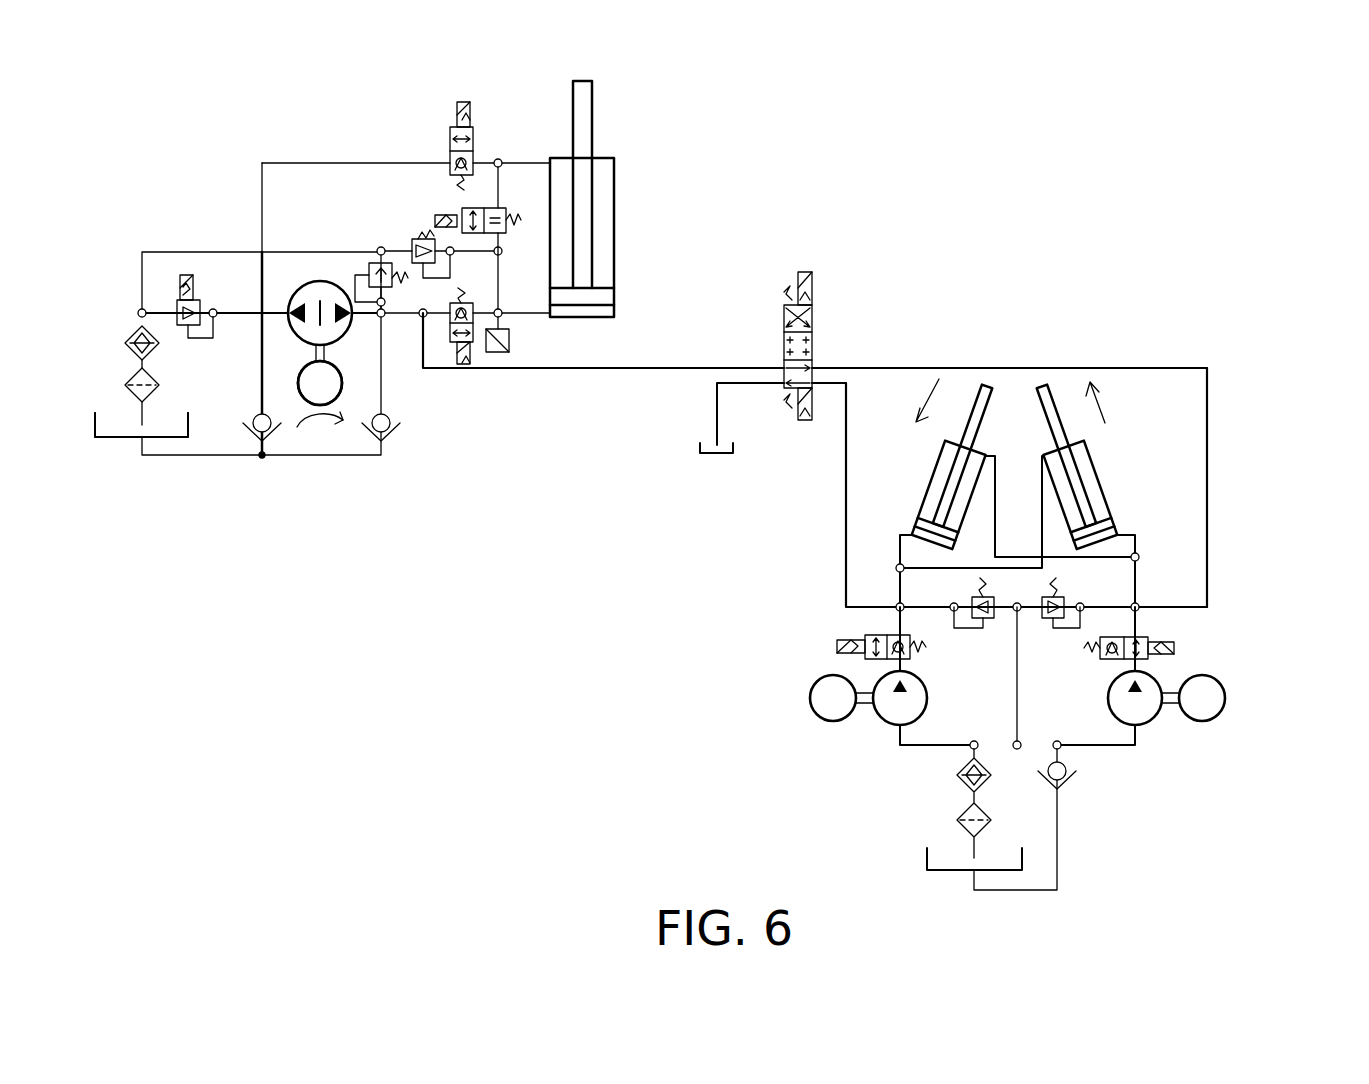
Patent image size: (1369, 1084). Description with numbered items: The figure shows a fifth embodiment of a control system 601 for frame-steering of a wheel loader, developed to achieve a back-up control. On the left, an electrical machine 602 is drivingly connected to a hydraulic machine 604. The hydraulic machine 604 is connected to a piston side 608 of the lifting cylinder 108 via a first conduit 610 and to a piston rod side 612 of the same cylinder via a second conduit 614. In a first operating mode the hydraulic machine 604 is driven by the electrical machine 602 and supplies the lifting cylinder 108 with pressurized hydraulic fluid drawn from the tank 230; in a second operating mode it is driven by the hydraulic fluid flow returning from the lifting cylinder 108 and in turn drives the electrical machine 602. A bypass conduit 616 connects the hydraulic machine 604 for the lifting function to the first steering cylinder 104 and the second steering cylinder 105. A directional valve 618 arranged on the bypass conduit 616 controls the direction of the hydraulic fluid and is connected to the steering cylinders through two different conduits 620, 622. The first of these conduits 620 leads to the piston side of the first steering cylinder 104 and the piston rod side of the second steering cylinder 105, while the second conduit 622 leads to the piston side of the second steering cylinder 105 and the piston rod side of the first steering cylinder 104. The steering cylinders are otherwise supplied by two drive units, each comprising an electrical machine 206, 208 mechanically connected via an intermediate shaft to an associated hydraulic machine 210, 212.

The control system 601 is at (170, 116).
The hydraulic machine 604 is at (293, 295).
The second conduit 614 is at (527, 162).
The piston rod side 612 is at (611, 168).
The lifting cylinder 108 is at (614, 237).
The piston side 608 is at (614, 311).
The first conduit 610 is at (525, 313).
The bypass conduit 616 is at (543, 368).
The directional valve 618 is at (812, 318).
The first conduit 620 is at (845, 474).
The second conduit 622 is at (1209, 488).
The first steering cylinder 104 is at (923, 490).
The second steering cylinder 105 is at (1110, 488).
The electrical machine 206 is at (810, 703).
The electrical machine 208 is at (1225, 703).
The hydraulic machine 210 is at (882, 722).
The hydraulic machine 212 is at (1152, 720).
The tank 230 is at (120, 437).
The electrical machine 602 is at (342, 385).